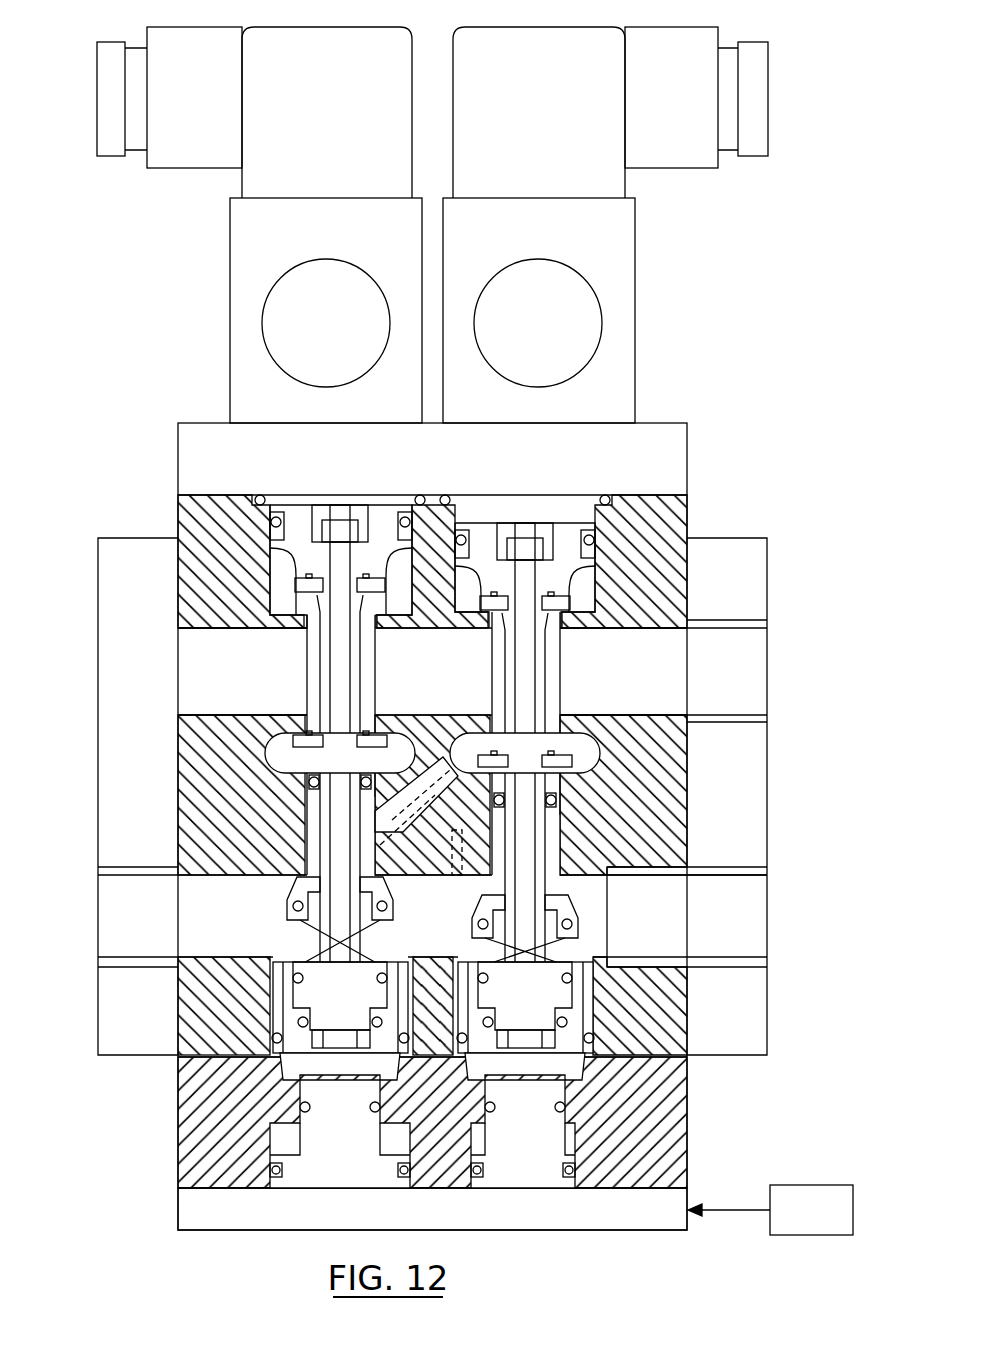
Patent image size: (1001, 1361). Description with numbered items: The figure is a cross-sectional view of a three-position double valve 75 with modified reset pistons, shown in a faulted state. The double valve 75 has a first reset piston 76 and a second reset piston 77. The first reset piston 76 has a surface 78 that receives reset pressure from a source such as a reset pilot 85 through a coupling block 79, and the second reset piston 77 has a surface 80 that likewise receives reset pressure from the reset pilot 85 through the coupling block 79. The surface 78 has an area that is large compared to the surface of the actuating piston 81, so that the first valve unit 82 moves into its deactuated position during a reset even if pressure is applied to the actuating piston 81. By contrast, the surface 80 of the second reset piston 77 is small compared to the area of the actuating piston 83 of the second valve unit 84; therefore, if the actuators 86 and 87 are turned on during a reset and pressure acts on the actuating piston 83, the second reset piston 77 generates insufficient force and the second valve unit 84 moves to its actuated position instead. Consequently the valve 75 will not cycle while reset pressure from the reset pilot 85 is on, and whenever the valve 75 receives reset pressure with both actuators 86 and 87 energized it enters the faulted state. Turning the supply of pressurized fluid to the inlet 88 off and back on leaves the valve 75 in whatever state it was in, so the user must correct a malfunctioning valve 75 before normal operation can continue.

The double valve 75 is at (165, 382).
The first reset piston 76 is at (302, 1178).
The second reset piston 77 is at (547, 1178).
The surface 78 is at (330, 1185).
The coupling block 79 is at (178, 1209).
The surface 80 is at (520, 1185).
The actuating piston 81 is at (298, 530).
The first valve unit 82 is at (291, 681).
The actuating piston 83 is at (573, 535).
The second valve unit 84 is at (547, 673).
The reset pilot 85 is at (770, 1210).
The actuator 86 is at (238, 247).
The actuator 87 is at (628, 240).
The inlet 88 is at (668, 915).